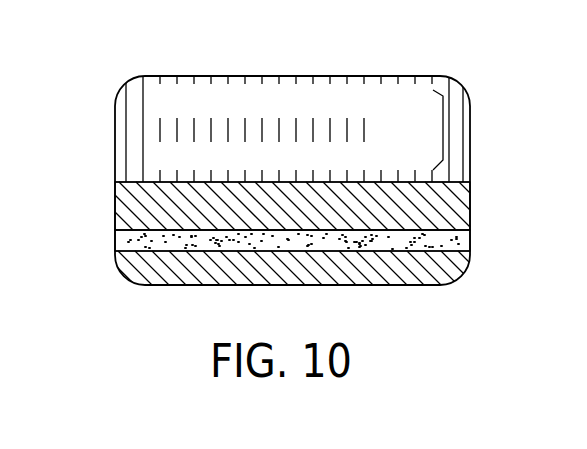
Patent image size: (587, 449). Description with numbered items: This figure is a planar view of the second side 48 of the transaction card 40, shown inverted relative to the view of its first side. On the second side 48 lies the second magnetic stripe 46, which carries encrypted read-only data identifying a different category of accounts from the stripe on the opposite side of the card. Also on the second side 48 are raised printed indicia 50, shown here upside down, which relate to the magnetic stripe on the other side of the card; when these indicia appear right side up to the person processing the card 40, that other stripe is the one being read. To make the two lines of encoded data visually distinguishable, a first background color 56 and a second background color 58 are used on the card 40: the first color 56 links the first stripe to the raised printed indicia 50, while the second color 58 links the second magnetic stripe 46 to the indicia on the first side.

The transaction card 40 is at (226, 69).
The second background color 58 is at (127, 113).
The raised printed indicia 50 is at (443, 122).
The second side 48 is at (118, 182).
The first background color 56 is at (443, 207).
The second magnetic stripe 46 is at (116, 241).